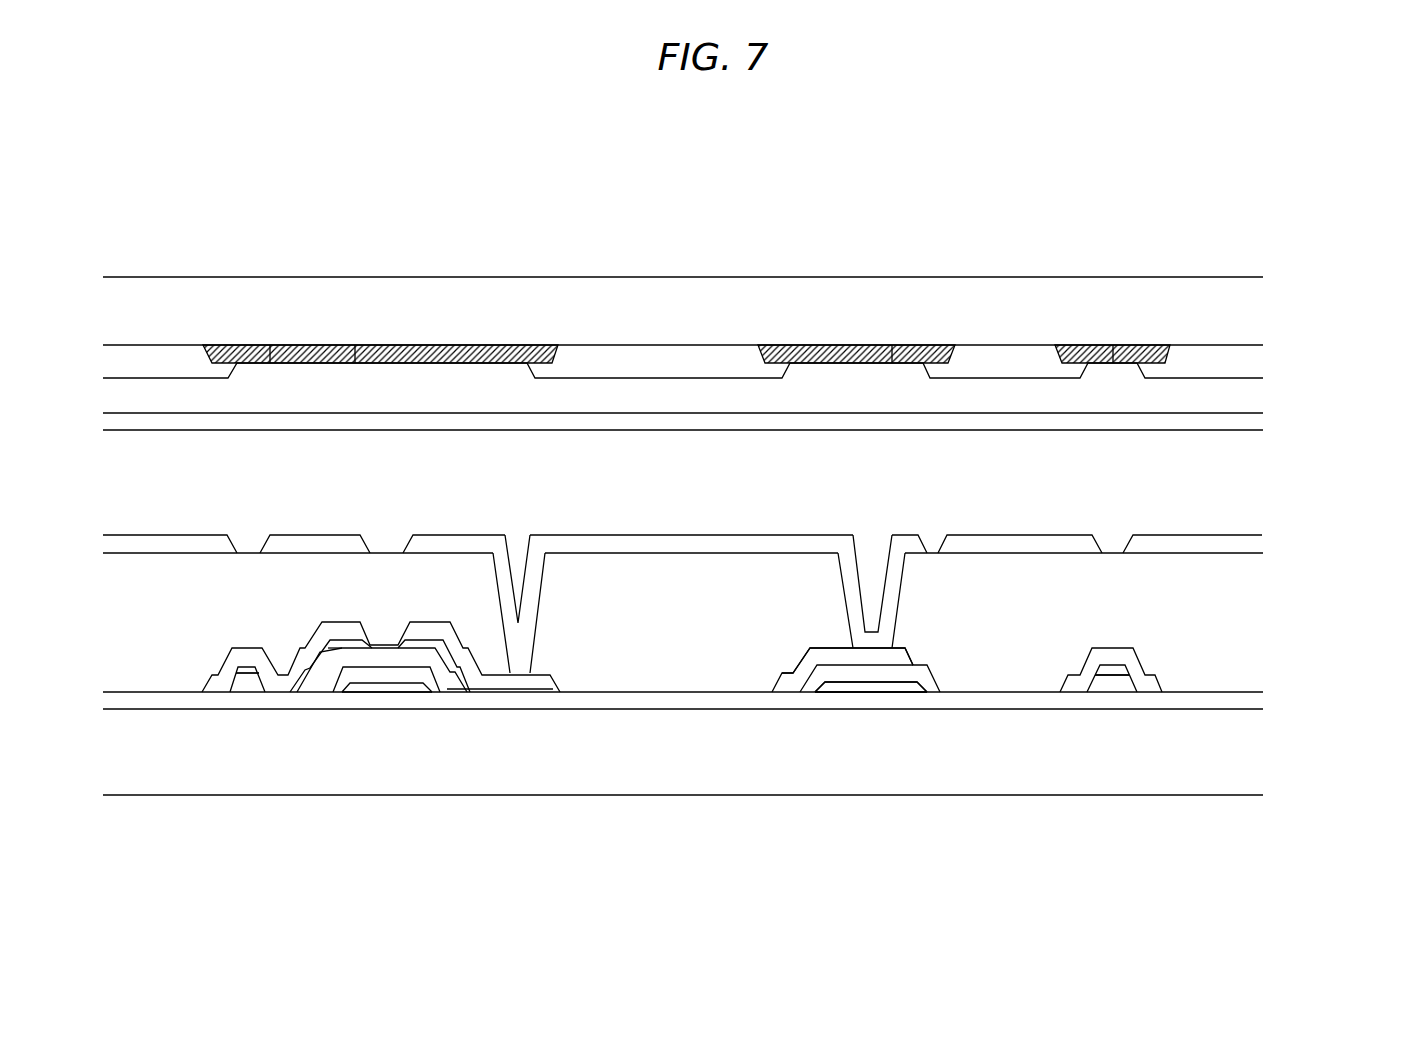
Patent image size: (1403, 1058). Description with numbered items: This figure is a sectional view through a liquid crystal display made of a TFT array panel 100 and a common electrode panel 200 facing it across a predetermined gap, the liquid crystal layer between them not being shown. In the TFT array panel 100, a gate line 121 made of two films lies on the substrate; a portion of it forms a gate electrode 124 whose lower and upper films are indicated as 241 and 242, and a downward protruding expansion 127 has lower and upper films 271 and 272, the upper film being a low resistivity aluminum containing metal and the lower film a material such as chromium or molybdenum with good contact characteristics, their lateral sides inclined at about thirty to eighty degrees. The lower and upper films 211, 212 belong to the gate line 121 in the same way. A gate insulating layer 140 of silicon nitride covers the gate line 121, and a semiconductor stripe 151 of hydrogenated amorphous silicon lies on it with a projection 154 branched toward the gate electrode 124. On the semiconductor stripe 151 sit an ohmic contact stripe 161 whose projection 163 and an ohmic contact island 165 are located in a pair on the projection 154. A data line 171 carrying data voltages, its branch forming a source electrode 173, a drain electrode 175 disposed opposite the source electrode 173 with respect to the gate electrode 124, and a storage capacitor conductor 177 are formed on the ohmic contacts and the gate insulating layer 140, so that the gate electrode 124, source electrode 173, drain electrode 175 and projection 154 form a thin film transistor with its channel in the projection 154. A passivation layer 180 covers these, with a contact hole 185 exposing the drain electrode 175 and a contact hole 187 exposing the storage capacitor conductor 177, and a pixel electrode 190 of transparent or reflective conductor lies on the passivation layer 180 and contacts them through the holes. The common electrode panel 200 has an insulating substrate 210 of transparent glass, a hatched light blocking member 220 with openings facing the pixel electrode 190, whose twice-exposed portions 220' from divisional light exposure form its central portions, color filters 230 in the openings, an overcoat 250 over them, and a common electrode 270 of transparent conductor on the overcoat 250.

The TFT array panel 100 is at (1276, 579).
The common electrode panel 200 is at (1276, 329).
The insulating substrate 210 is at (748, 297).
The light blocking member 220 is at (686, 284).
The twice-exposed portions 220' is at (689, 284).
The color filters 230 is at (167, 363).
The overcoat 250 is at (493, 383).
The common electrode 270 is at (658, 428).
The gate line 121 is at (890, 786).
The gate electrode 124 is at (387, 788).
The expansion 127 is at (853, 786).
The gate insulating layer 140 is at (520, 699).
The semiconductor stripe 151 is at (240, 690).
The projection 154 is at (312, 682).
The ohmic contact stripe 161 is at (253, 672).
The projection 163 is at (342, 650).
The ohmic contact island 165 is at (445, 688).
The data line 171 is at (215, 688).
The source electrode 173 is at (330, 632).
The drain electrode 175 is at (427, 632).
The storage capacitor conductor 177 is at (790, 686).
The passivation layer 180 is at (620, 682).
The contact hole 185 is at (517, 546).
The contact hole 187 is at (872, 548).
The pixel electrode 190 is at (690, 548).
The lower film of gate line 211 is at (890, 698).
The upper film of gate line 212 is at (907, 686).
The lower film of gate electrode 241 is at (373, 697).
The upper film of gate electrode 242 is at (409, 697).
The lower film of expansion 271 is at (827, 698).
The upper film of expansion 272 is at (853, 688).